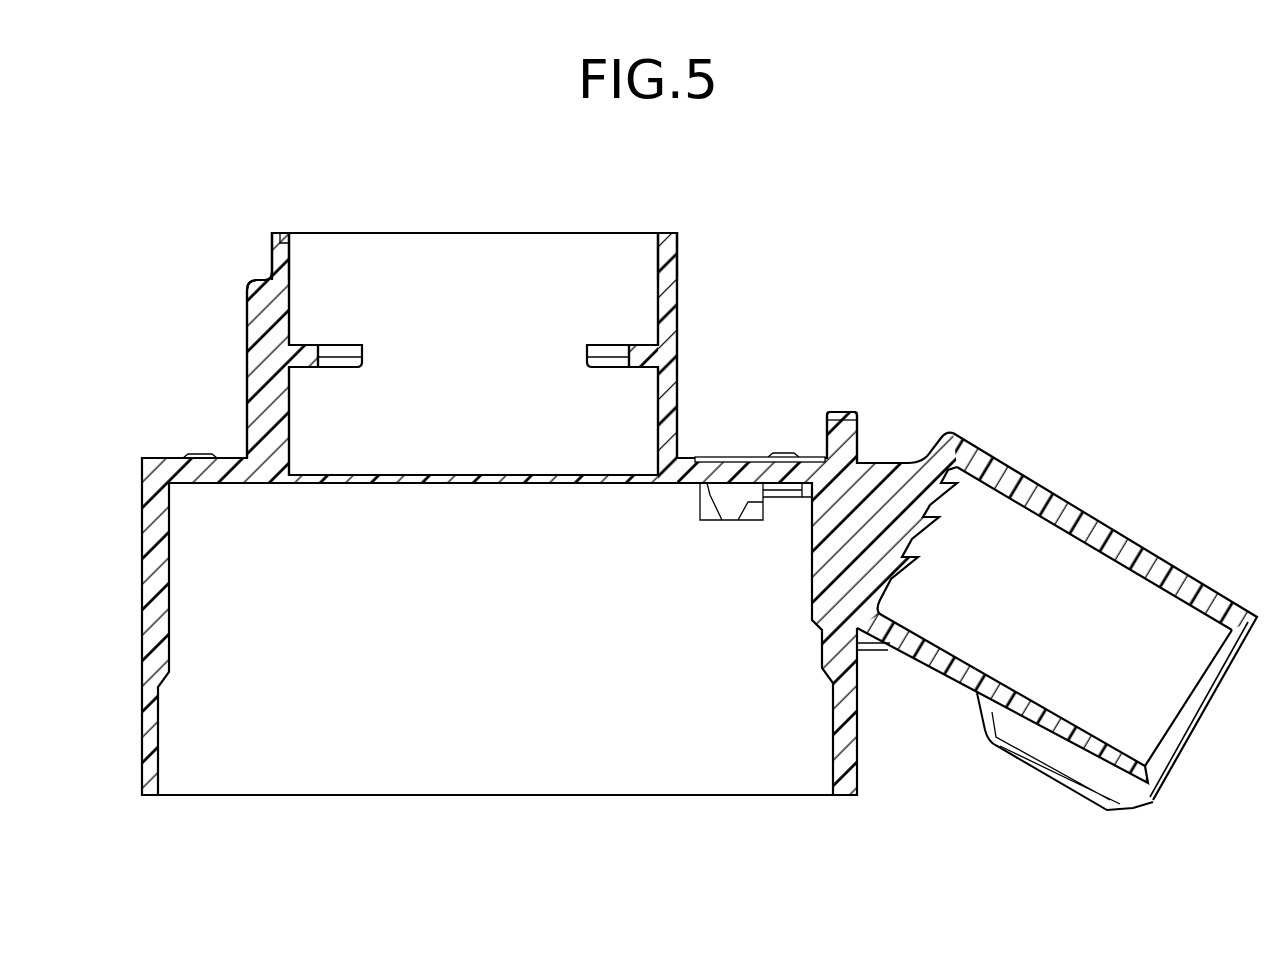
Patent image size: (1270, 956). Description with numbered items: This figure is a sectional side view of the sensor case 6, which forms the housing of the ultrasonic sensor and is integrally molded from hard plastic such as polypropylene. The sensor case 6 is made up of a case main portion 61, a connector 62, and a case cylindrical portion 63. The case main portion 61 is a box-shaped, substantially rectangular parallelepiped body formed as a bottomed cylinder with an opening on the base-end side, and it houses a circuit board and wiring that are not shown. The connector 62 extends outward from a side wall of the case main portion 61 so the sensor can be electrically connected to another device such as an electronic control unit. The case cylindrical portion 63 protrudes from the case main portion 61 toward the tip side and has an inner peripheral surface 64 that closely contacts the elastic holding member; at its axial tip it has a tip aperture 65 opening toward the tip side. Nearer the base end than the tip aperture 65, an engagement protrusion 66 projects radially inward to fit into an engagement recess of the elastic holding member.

The case main portion 61 is at (852, 768).
The connector 62 is at (1083, 517).
The case cylindrical portion 63 is at (668, 300).
The inner peripheral surface 64 is at (290, 258).
The tip aperture 65 is at (657, 233).
The engagement protrusion 66 is at (343, 345).
The sensor case 6 is at (858, 457).